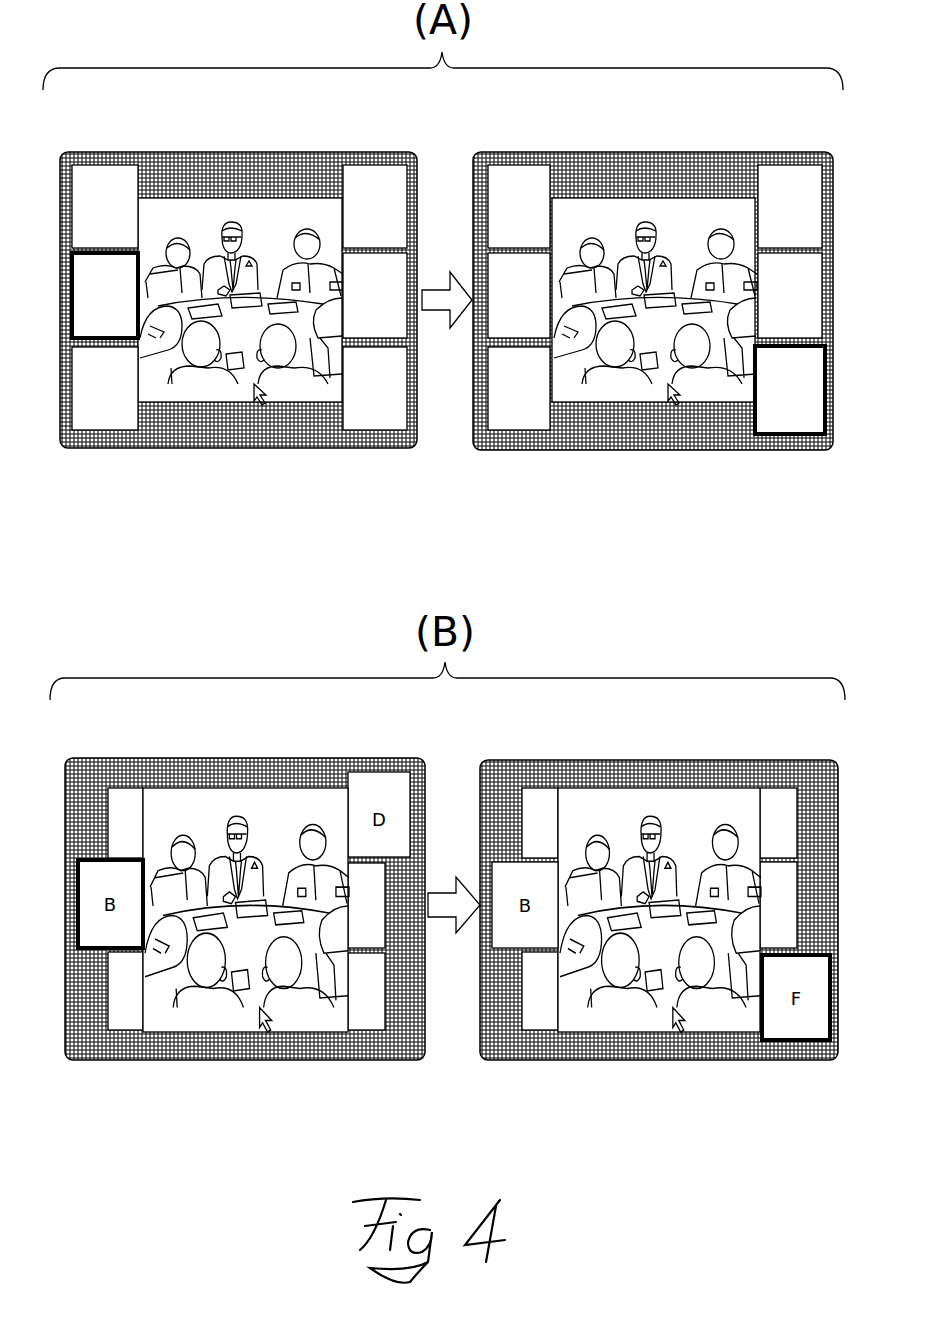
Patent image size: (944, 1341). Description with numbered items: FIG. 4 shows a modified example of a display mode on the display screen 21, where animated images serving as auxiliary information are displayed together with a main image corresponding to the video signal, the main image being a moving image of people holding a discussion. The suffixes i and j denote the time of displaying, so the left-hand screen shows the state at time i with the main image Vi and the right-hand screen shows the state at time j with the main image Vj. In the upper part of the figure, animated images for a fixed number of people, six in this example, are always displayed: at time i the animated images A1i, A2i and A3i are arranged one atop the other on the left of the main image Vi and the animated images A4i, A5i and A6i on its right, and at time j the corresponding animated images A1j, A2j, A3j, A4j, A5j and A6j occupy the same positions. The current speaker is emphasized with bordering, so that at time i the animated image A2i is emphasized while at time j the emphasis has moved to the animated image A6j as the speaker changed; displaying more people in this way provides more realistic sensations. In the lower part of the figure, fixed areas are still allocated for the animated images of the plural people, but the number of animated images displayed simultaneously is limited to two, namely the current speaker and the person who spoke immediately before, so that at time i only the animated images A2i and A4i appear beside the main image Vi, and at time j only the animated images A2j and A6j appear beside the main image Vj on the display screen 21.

The display screen 21 is at (181, 450).
The main image at time i Vi is at (265, 413).
The main image at time j Vj is at (665, 405).
The animated image A1 at time i A1i is at (93, 160).
The animated image A2 at time i A2i is at (152, 247).
The animated image A3 at time i A3i is at (108, 443).
The animated image A4 at time i A4i is at (360, 155).
The animated image A5 at time i A5i is at (333, 257).
The animated image A6 at time i A6i is at (373, 450).
The animated image A1 at time j A1j is at (508, 153).
The animated image A2 at time j A2j is at (563, 257).
The animated image A3 at time j A3j is at (520, 450).
The animated image A4 at time j A4j is at (777, 157).
The animated image A5 at time j A5j is at (742, 253).
The animated image A6 at time j A6j is at (787, 452).